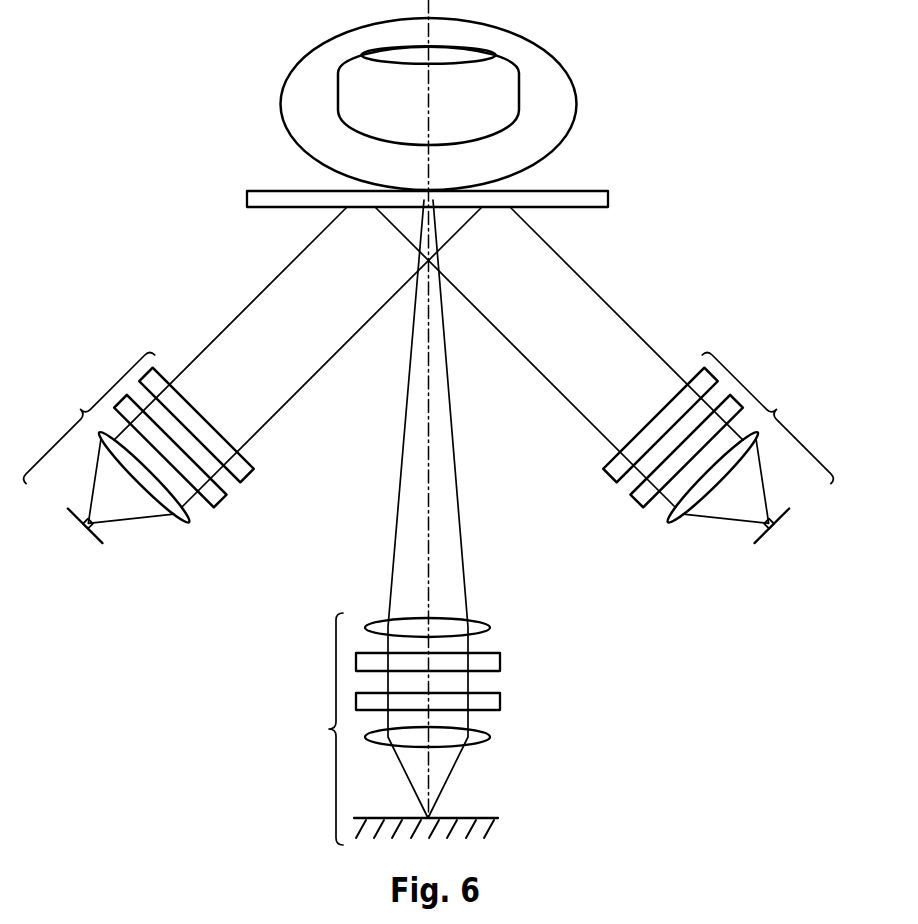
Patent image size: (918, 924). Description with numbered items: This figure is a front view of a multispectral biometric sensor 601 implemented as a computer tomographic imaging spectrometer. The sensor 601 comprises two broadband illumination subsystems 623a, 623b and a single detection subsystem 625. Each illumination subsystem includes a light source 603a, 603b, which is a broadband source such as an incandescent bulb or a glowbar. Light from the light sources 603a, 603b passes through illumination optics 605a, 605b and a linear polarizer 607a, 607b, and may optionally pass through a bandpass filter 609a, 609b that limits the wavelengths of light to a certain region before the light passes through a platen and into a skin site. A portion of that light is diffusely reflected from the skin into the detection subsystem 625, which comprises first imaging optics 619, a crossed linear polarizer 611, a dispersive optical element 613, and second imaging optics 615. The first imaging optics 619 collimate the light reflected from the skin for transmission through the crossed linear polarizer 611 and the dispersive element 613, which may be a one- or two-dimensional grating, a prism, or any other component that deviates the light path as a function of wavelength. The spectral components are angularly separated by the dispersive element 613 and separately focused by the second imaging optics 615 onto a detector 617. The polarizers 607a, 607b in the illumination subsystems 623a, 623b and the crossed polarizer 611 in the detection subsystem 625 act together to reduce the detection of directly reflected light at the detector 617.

The multispectral biometric sensor 601 is at (211, 270).
The light source 603a is at (87, 537).
The light source 603b is at (780, 555).
The illumination optics 605a is at (187, 518).
The illumination optics 605b is at (670, 518).
The linear polarizer 607a is at (225, 500).
The linear polarizer 607b is at (632, 502).
The bandpass filter 609a is at (253, 471).
The bandpass filter 609b is at (617, 457).
The crossed linear polarizer 611 is at (500, 665).
The dispersive optical element 613 is at (500, 702).
The second imaging optics 615 is at (490, 737).
The detector 617 is at (608, 200).
The first imaging optics 619 is at (553, 57).
The illumination subsystem 623a is at (82, 410).
The illumination subsystem 623b is at (775, 410).
The detection subsystem 625 is at (329, 729).